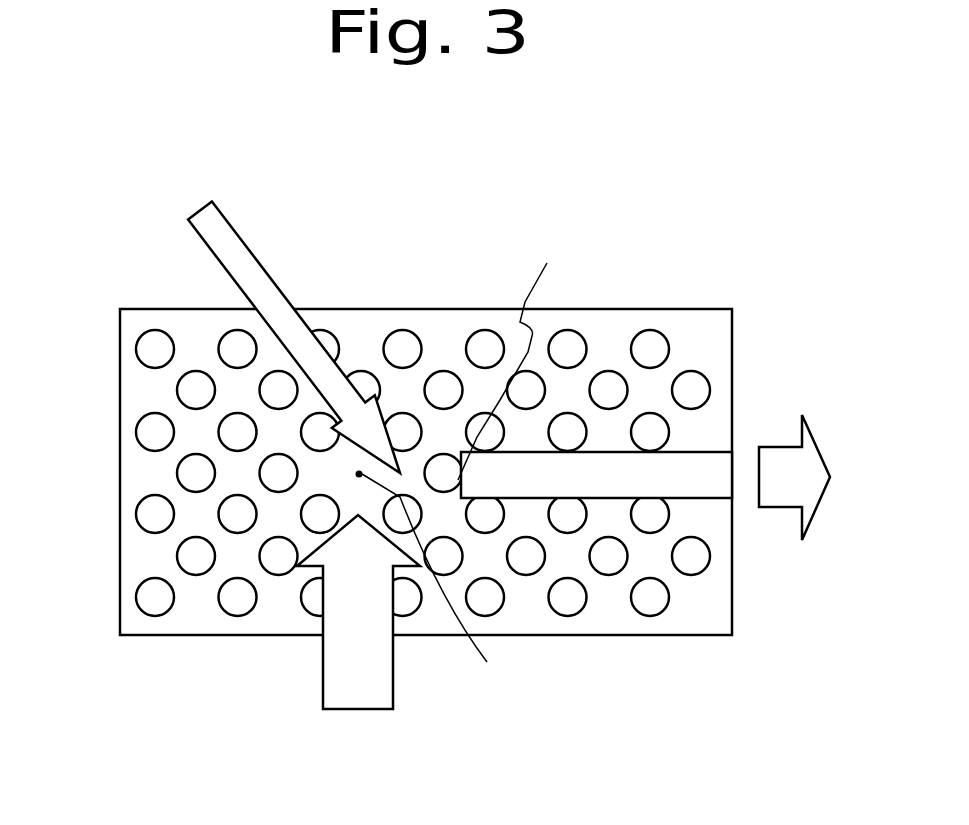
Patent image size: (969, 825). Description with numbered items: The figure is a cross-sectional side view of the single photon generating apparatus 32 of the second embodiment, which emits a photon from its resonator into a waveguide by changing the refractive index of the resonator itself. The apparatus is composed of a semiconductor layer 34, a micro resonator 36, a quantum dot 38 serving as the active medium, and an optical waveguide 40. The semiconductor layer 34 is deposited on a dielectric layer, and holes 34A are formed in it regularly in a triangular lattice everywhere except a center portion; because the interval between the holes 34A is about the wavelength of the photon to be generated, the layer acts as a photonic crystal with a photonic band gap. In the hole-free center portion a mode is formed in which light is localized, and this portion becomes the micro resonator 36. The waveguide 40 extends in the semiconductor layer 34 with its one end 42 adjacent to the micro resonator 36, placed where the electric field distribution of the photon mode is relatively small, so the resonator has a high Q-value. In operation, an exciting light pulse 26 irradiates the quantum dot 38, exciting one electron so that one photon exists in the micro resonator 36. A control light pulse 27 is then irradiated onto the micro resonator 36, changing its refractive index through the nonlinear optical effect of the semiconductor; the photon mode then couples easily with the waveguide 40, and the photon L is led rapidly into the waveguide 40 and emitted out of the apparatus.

The exciting light pulse 26 is at (323, 680).
The control light pulse 27 is at (243, 240).
The single photon generating apparatus 32 is at (106, 234).
The semiconductor layer 34 is at (702, 310).
The holes 34A is at (494, 333).
The micro resonator 36 is at (323, 476).
The quantum dot 38 is at (431, 584).
The optical waveguide 40 is at (612, 500).
The one end of the waveguide 42 is at (510, 356).
The photon L is at (806, 477).